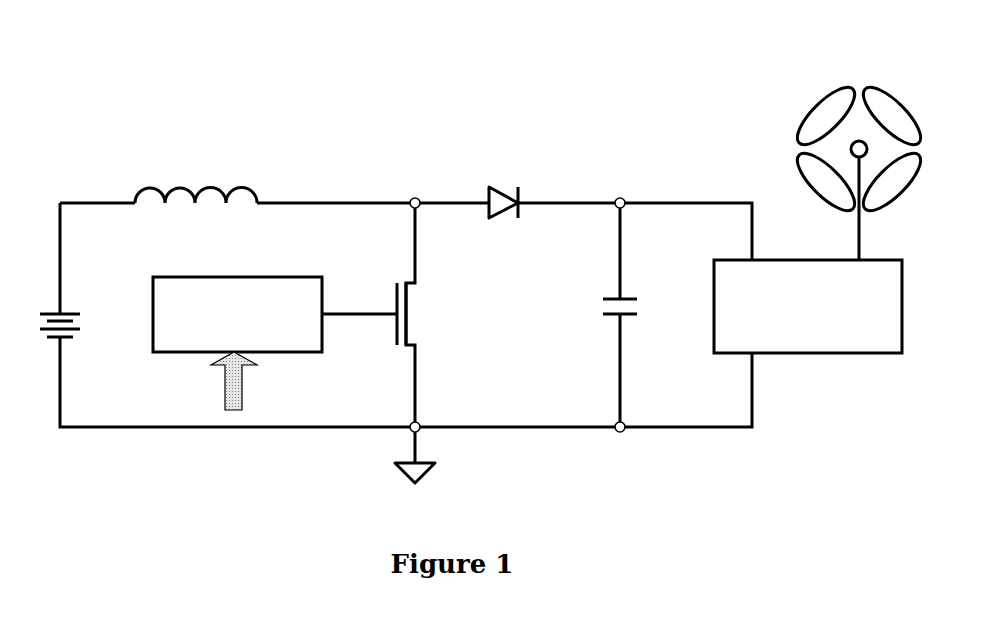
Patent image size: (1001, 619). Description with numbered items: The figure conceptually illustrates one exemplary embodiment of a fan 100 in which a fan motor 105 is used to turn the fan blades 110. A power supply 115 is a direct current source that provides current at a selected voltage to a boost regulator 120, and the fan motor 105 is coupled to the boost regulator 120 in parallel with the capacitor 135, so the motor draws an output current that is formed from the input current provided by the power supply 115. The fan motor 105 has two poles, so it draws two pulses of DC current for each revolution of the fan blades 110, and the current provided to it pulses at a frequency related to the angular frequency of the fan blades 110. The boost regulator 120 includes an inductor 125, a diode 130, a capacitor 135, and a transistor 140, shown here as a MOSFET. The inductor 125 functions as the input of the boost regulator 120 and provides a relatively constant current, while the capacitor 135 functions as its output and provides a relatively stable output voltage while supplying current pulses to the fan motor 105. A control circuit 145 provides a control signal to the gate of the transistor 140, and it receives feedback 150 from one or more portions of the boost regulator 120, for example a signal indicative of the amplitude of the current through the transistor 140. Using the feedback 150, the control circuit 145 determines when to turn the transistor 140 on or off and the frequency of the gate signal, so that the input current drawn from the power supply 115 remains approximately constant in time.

The fan 100 is at (108, 53).
The fan motor 105 is at (808, 306).
The fan blades 110 is at (838, 110).
The power supply 115 is at (55, 310).
The boost regulator 120 is at (305, 136).
The inductor 125 is at (147, 182).
The diode 130 is at (491, 185).
The capacitor 135 is at (612, 295).
The transistor 140 is at (393, 330).
The control circuit 145 is at (275, 314).
The feedback 150 is at (222, 403).